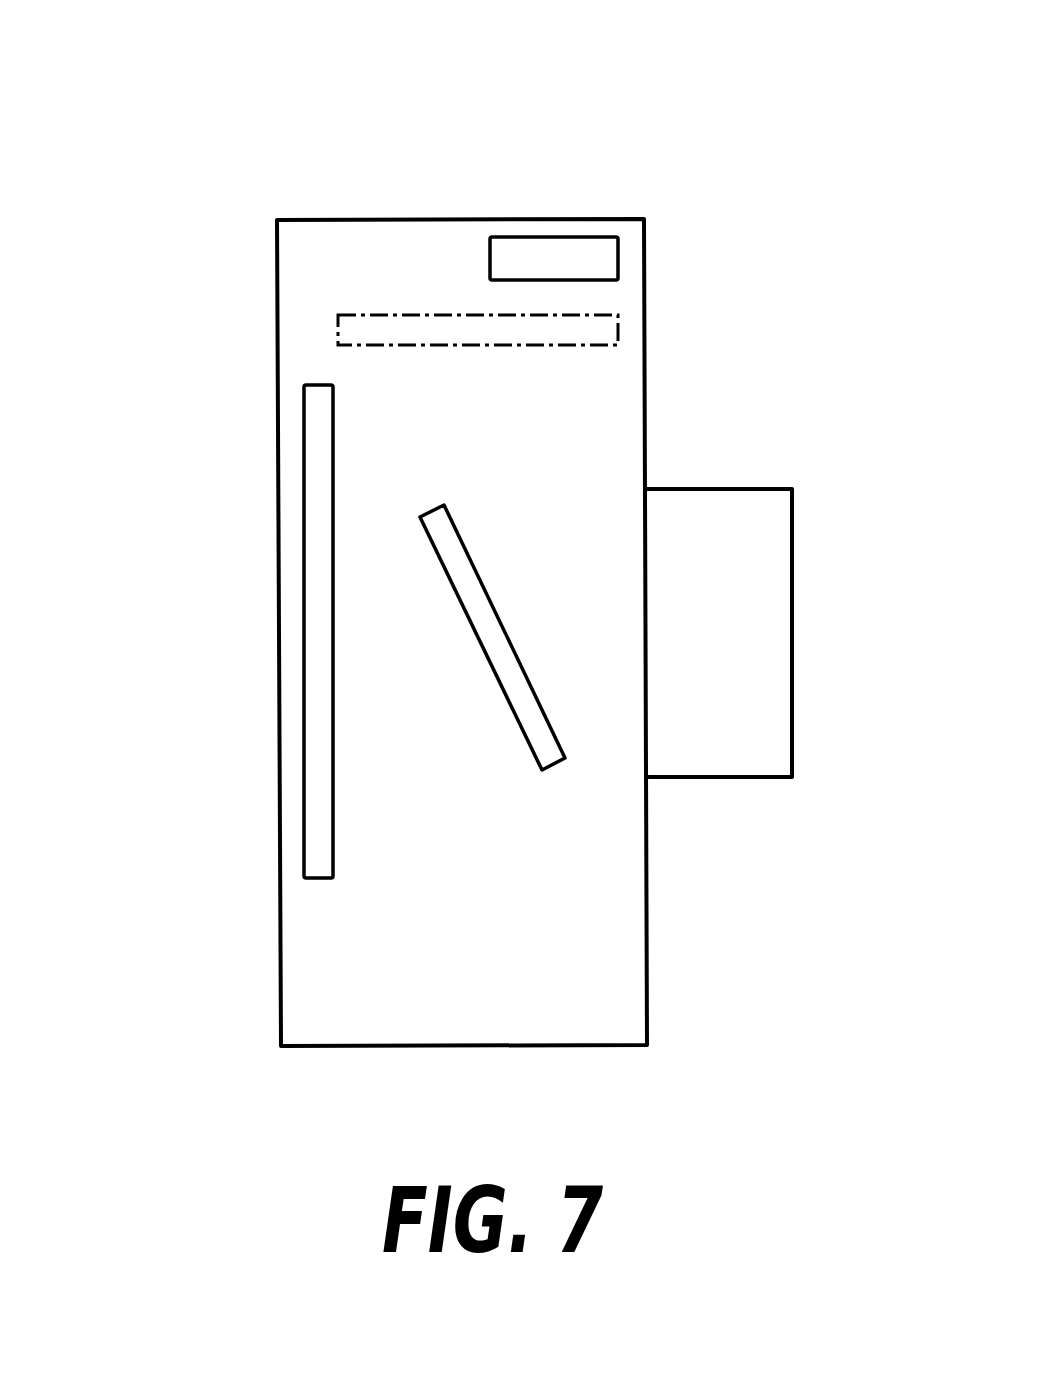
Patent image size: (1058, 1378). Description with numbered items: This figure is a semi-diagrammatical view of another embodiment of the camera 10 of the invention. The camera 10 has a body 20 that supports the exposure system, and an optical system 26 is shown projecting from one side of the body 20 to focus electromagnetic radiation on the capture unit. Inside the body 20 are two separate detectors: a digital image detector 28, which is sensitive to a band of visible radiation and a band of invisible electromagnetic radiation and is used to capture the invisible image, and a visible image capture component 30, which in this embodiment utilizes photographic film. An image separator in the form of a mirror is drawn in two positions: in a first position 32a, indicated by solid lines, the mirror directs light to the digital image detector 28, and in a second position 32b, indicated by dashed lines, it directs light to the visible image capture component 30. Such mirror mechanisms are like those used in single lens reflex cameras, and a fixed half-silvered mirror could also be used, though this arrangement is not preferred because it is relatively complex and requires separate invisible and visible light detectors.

The camera 10 is at (523, 115).
The body 20 is at (465, 1046).
The digital image detector 28 is at (618, 237).
The second position 32b is at (392, 310).
The optical system 26 is at (752, 489).
The visible image capture component 30 is at (313, 878).
The first position 32a is at (553, 768).